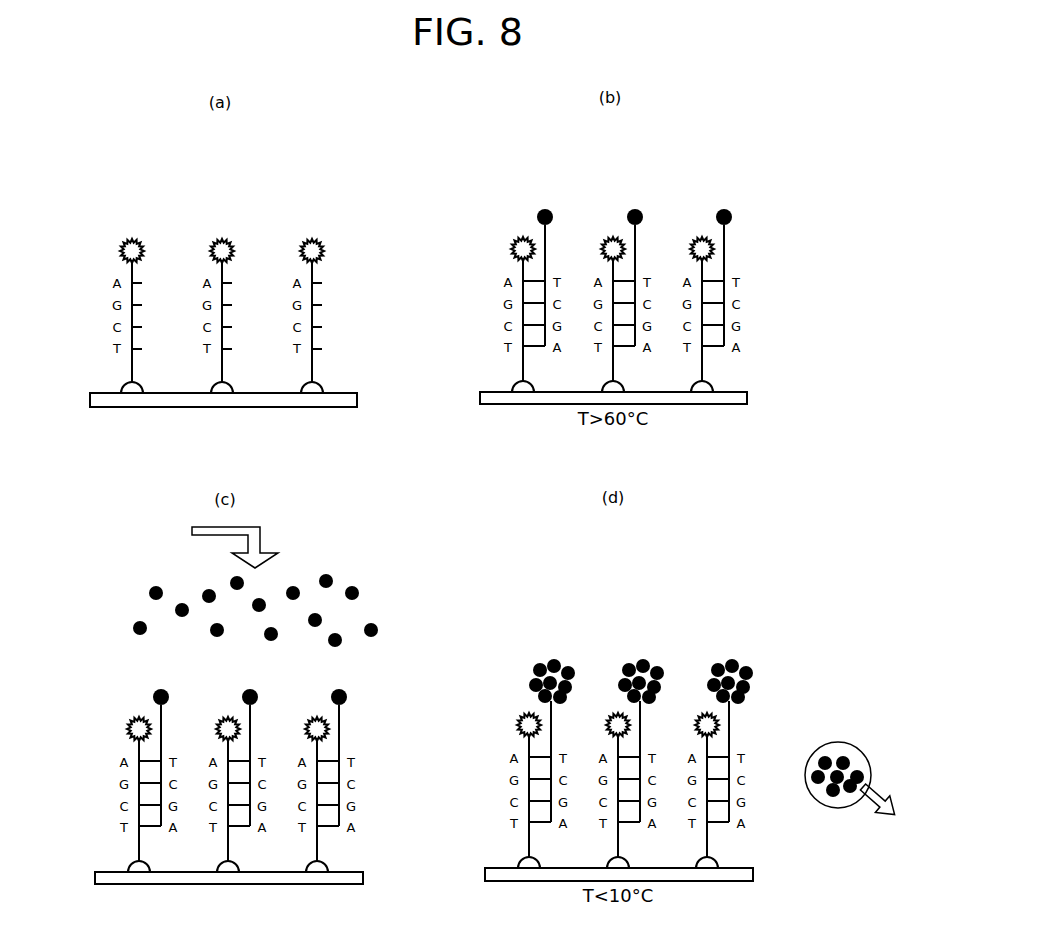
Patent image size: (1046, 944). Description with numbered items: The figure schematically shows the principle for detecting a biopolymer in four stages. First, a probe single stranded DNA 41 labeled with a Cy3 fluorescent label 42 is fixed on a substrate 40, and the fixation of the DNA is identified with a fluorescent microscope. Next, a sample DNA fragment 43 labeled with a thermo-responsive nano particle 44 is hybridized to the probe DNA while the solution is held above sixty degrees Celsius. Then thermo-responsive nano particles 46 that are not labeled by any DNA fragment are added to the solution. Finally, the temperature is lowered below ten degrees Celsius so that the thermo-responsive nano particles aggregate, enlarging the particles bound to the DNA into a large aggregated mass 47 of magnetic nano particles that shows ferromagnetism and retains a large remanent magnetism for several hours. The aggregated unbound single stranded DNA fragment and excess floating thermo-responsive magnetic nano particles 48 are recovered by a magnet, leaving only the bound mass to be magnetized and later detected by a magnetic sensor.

The substrate 40 is at (357, 396).
The probe single stranded DNA 41 is at (207, 245).
The Cy3 fluorescent label 42 is at (221, 239).
The sample DNA fragment 43 is at (648, 238).
The thermo-responsive nano particle 44 is at (640, 208).
The thermo-responsive nano particles 46 is at (358, 590).
The aggregated mass of magnetic nano particles 47 is at (758, 675).
The excess floating thermo-responsive magnetic nano particles 48 is at (843, 760).